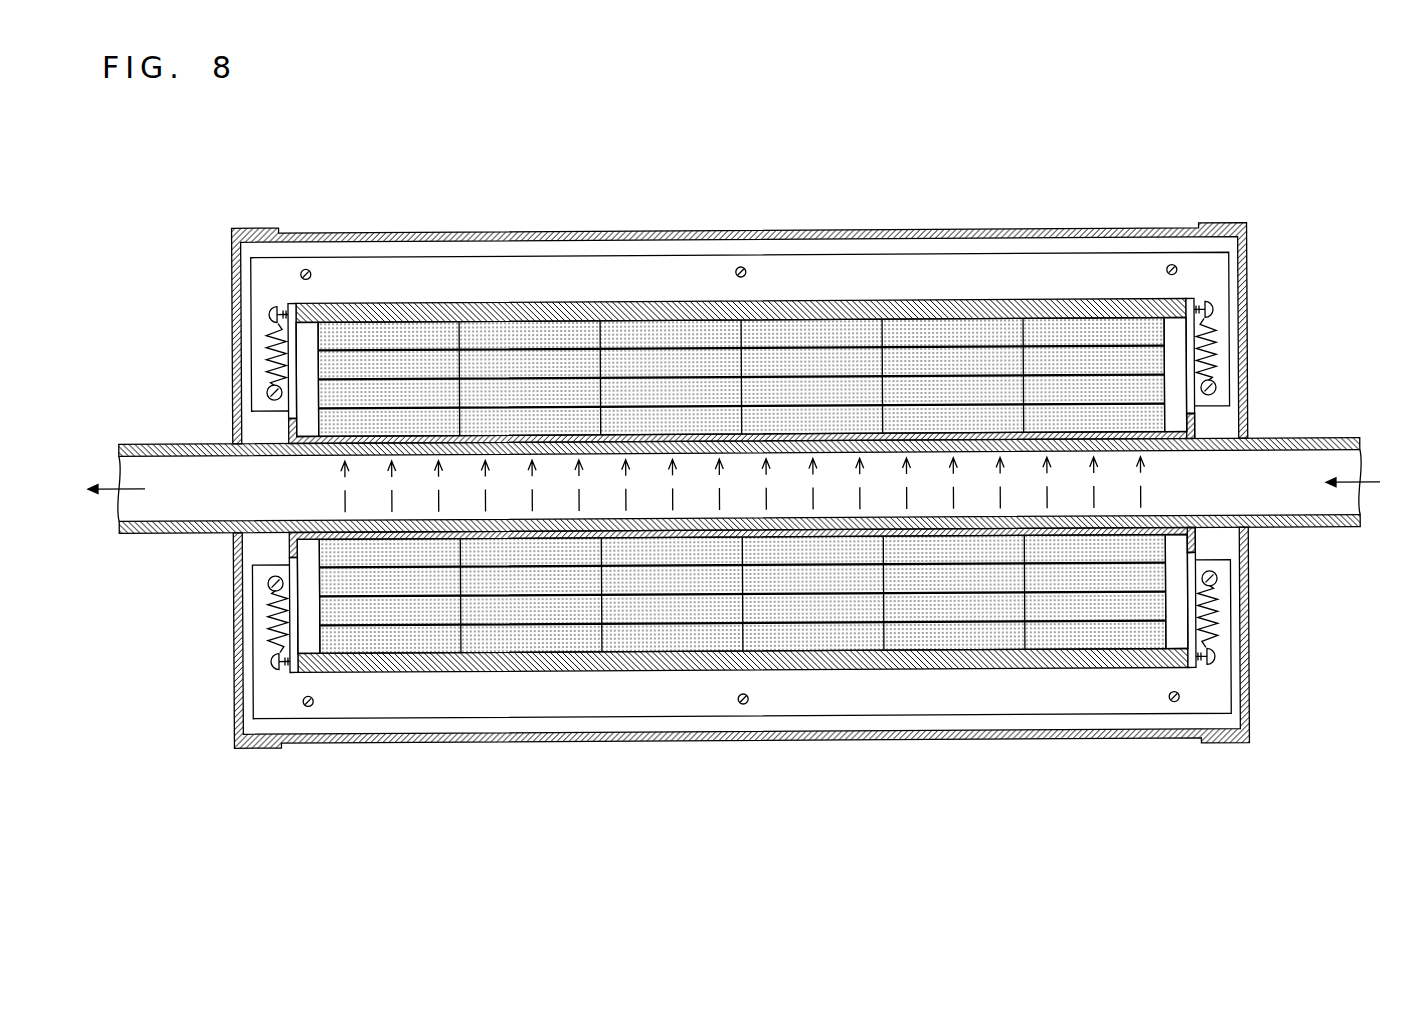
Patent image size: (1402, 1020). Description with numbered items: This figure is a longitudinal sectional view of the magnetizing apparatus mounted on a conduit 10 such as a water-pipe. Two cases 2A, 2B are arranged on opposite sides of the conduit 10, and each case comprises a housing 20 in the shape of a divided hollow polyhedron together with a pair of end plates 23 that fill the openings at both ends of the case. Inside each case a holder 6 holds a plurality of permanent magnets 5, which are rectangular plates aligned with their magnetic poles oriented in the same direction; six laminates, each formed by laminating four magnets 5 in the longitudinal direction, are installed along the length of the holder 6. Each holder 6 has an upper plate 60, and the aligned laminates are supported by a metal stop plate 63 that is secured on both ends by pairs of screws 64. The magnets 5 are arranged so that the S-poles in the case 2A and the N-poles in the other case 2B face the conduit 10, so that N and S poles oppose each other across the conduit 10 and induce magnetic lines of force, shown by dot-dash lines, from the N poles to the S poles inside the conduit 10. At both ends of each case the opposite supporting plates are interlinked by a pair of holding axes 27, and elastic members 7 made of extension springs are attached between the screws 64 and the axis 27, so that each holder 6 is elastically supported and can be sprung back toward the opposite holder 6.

The case 2A is at (1131, 231).
The case 2B is at (1123, 743).
The permanent magnets 5 is at (846, 330).
The holder 6 is at (280, 431).
The elastic members 7 is at (265, 359).
The conduit 10 is at (124, 533).
The housing 20 is at (447, 234).
The end plates 23 is at (235, 315).
The holding axes 27 is at (267, 390).
The upper plate 60 is at (1196, 421).
The stop plate 63 is at (632, 300).
The screws 64 is at (269, 314).